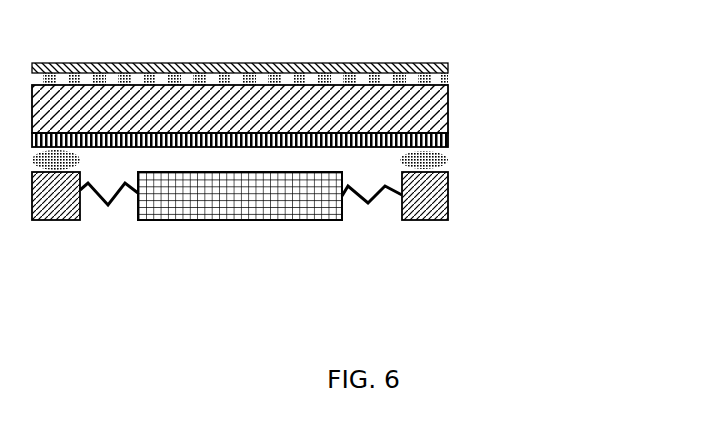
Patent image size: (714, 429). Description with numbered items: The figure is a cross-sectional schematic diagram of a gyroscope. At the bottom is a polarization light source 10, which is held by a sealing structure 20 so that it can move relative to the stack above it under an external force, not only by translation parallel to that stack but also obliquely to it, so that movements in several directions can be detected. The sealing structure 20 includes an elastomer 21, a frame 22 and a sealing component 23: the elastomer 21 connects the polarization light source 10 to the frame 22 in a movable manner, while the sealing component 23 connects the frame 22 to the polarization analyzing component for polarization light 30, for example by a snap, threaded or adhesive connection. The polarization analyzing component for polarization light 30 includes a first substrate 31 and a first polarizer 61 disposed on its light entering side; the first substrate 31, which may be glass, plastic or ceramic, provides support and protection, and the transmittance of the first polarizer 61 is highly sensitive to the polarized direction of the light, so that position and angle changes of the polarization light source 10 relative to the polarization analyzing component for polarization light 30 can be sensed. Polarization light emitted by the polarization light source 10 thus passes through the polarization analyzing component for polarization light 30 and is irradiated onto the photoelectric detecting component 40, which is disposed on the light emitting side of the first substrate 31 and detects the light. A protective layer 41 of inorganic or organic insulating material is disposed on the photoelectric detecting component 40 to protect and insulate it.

The polarization light source 10 is at (240, 220).
The sealing structure 20 is at (347, 212).
The elastomer 21 is at (385, 185).
The frame 22 is at (448, 216).
The sealing component 23 is at (448, 159).
The polarization analyzing component for polarization light 30 is at (347, 127).
The first substrate 31 is at (448, 120).
The first polarizer 61 is at (448, 142).
The photoelectric detecting component 40 is at (448, 79).
The protective layer 41 is at (240, 63).